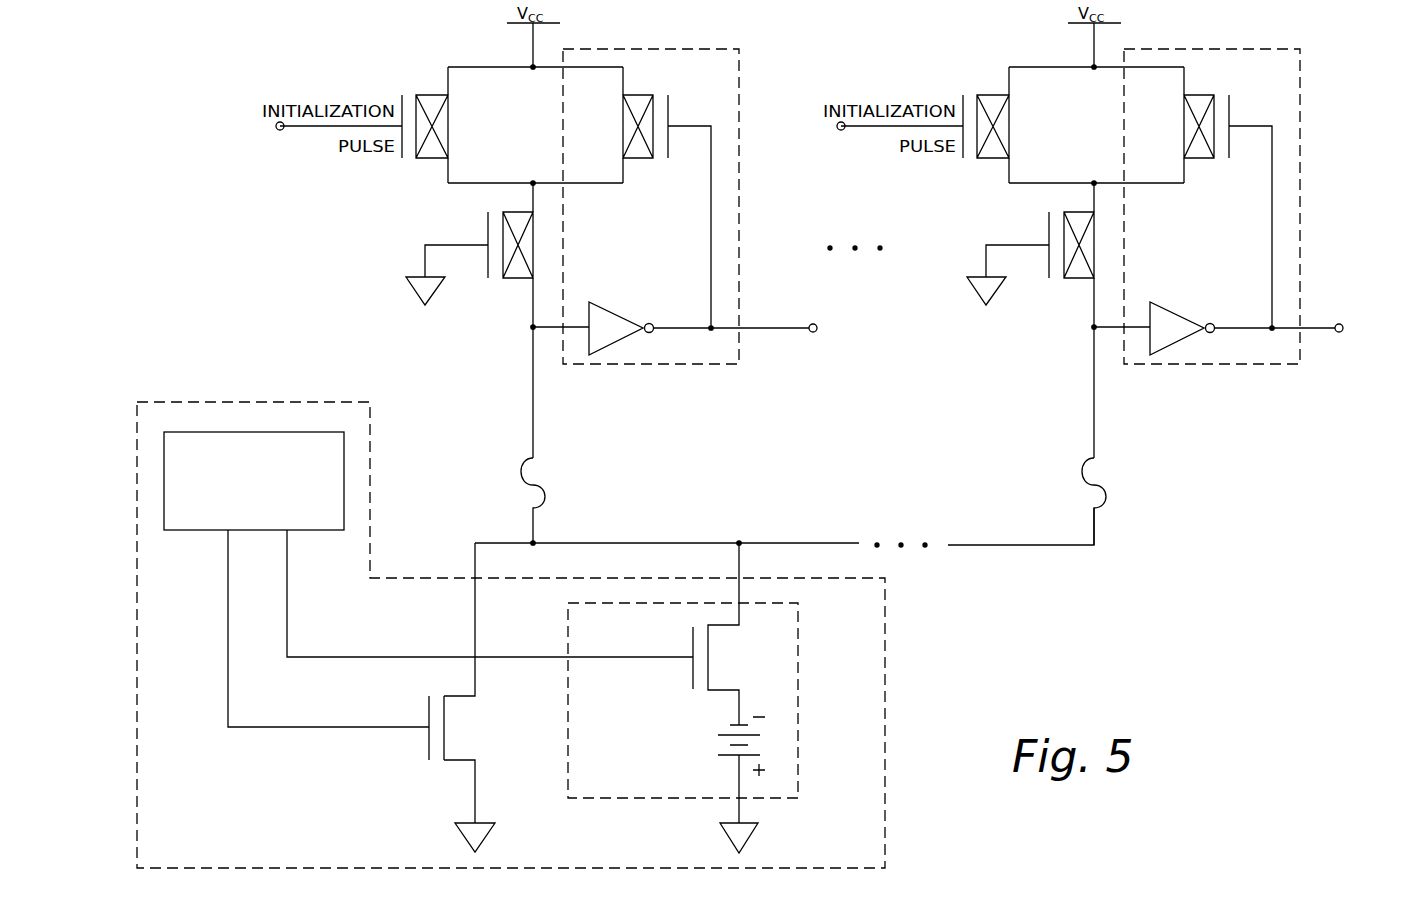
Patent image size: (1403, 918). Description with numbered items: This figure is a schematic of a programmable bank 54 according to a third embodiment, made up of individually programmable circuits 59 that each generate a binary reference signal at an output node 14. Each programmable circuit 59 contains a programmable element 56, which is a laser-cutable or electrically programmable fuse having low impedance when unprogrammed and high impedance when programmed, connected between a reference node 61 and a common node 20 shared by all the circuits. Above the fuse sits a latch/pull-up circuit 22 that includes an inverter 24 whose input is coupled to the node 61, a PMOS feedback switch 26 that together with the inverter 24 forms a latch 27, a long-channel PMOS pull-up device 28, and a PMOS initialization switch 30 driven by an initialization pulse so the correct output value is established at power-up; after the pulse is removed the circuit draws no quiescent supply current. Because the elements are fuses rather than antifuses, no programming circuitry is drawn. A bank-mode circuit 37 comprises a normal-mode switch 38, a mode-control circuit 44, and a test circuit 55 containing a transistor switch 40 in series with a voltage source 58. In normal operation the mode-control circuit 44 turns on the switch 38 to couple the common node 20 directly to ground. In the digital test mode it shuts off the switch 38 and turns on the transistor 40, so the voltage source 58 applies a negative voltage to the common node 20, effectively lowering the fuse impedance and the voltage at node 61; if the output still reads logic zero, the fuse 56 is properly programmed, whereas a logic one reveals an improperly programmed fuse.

The output node 14 is at (780, 332).
The common node 20 is at (793, 543).
The latch/pull-up circuit 22 is at (393, 248).
The inverter 24 is at (616, 310).
The feedback switch 26 is at (643, 158).
The latch 27 is at (740, 213).
The pull-up device 28 is at (510, 212).
The initialization switch 30 is at (427, 93).
The bank-mode circuit 37 is at (885, 738).
The normal-mode switch 38 is at (452, 762).
The switch 40 is at (715, 692).
The mode-control circuit 44 is at (320, 532).
The programmable bank 54 is at (1150, 552).
The test circuit 55 is at (798, 665).
The programmable element 56 is at (546, 490).
The voltage source 58 is at (726, 757).
The programmable circuit 59 is at (592, 405).
The node 61 is at (533, 327).